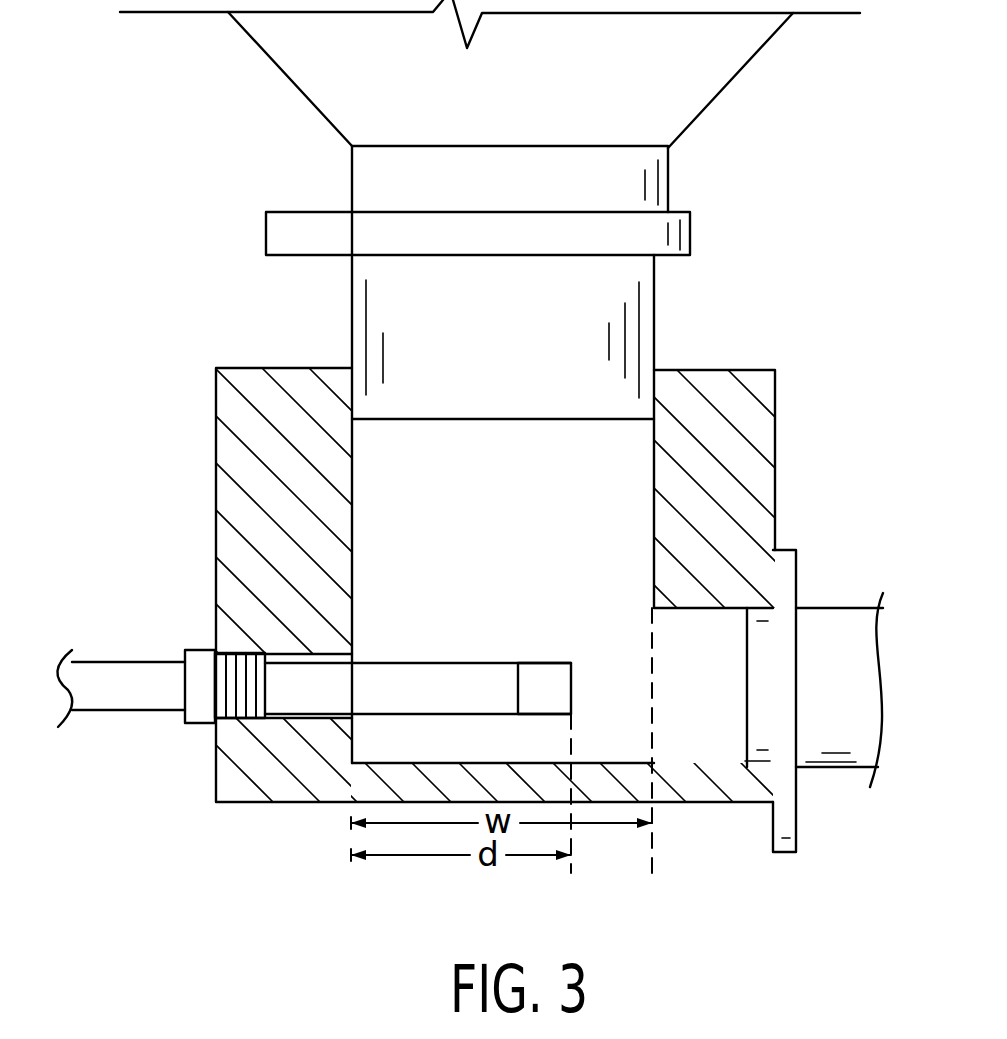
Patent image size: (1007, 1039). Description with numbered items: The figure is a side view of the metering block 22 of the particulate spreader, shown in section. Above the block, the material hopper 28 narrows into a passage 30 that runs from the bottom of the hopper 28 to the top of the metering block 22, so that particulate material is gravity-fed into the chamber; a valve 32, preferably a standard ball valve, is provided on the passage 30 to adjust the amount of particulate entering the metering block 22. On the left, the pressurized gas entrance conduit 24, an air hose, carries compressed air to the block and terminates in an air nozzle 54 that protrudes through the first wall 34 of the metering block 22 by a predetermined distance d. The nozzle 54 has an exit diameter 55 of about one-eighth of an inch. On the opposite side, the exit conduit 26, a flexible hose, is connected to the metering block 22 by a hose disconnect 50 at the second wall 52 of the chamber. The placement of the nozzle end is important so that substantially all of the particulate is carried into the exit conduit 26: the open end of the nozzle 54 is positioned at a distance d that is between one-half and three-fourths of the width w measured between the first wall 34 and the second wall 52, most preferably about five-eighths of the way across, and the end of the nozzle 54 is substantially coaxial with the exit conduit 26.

The metering block 22 is at (670, 350).
The pressurized gas entrance conduit 24 is at (122, 688).
The exit conduit 26 is at (837, 622).
The material hopper 28 is at (667, 103).
The passage 30 is at (351, 352).
The valve 32 is at (665, 230).
The first wall 34 is at (351, 461).
The hose disconnect 50 is at (787, 822).
The second wall 52 is at (654, 437).
The air nozzle 54 is at (418, 683).
The exit diameter 55 is at (518, 688).